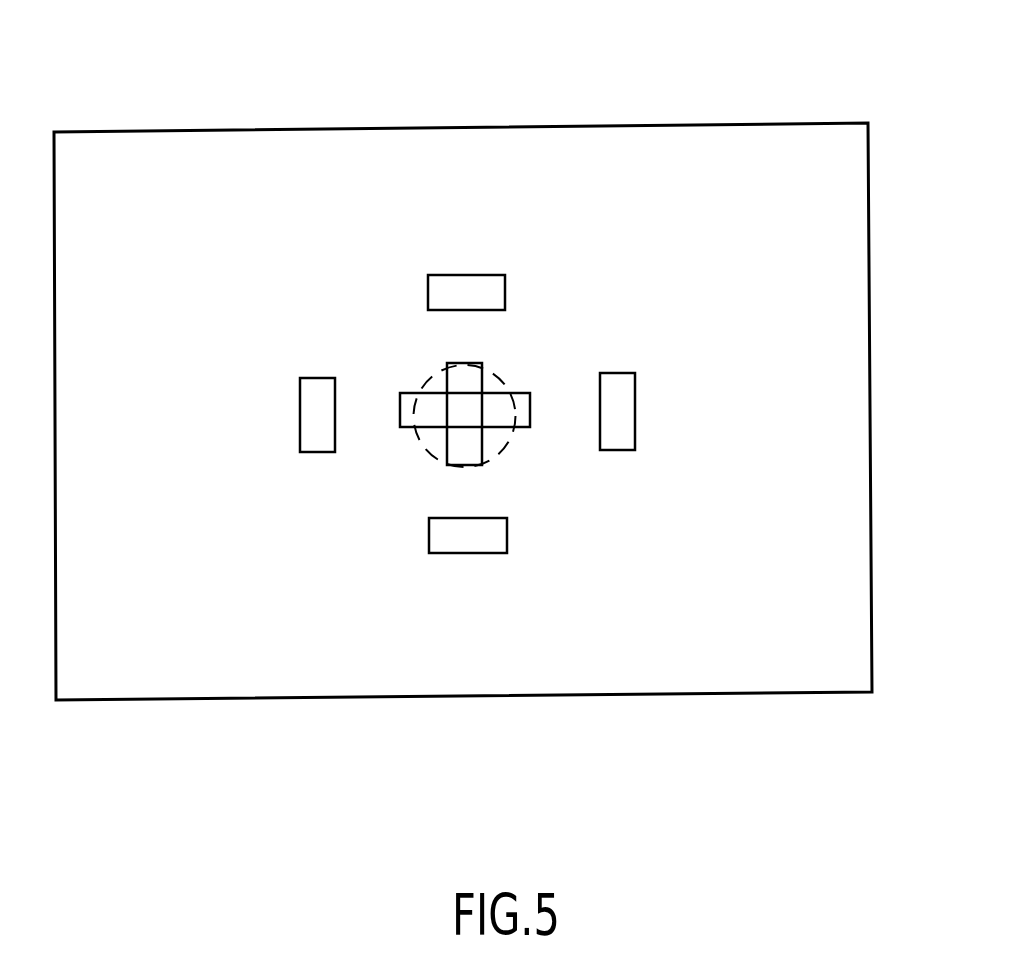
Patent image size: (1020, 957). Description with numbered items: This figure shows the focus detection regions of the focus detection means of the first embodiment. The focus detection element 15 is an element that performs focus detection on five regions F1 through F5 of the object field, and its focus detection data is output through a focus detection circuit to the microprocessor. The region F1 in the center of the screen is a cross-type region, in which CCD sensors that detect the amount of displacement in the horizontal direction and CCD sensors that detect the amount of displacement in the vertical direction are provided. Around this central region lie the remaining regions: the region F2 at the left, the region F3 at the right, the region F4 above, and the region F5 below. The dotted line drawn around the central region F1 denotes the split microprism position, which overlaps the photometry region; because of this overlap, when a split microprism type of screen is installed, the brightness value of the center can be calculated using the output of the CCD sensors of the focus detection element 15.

The focus detection element 15 is at (742, 110).
The focus detection region F1 is at (523, 428).
The focus detection region F2 is at (320, 452).
The focus detection region F3 is at (635, 421).
The focus detection region F4 is at (487, 275).
The focus detection region F5 is at (487, 553).